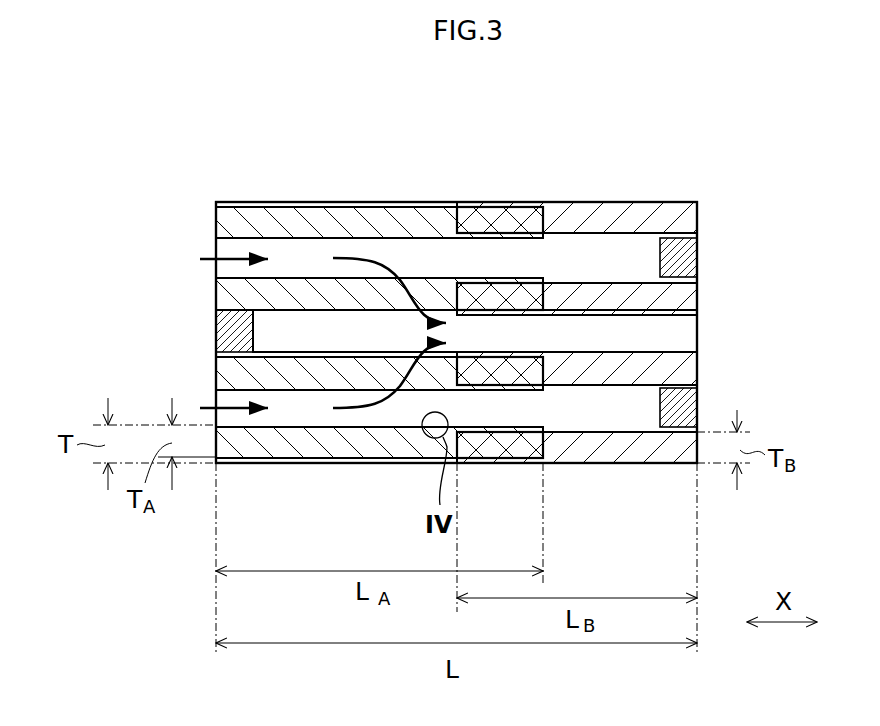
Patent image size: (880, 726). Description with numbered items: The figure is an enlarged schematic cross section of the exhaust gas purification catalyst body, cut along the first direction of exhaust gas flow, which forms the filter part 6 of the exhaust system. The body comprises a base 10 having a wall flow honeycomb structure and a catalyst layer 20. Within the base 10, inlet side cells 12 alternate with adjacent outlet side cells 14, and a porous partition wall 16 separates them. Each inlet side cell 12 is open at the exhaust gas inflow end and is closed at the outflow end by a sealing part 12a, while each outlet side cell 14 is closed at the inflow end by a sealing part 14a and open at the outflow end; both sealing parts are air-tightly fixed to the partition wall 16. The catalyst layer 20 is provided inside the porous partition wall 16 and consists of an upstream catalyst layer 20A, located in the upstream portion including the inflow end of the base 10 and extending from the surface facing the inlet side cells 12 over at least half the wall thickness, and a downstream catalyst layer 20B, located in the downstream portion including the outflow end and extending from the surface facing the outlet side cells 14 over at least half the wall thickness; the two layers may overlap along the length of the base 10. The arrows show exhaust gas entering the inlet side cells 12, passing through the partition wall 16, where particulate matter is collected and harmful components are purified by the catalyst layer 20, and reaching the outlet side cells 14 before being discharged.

The filter part 6 is at (688, 92).
The base 10 is at (693, 186).
The inlet side cells 12 is at (567, 253).
The sealing part 12a is at (698, 250).
The outlet side cells 14 is at (677, 335).
The sealing part 14a is at (215, 330).
The porous partition wall 16 is at (413, 270).
The catalyst layer 20 is at (527, 331).
The upstream catalyst layer 20A is at (300, 272).
The downstream catalyst layer 20B is at (647, 242).